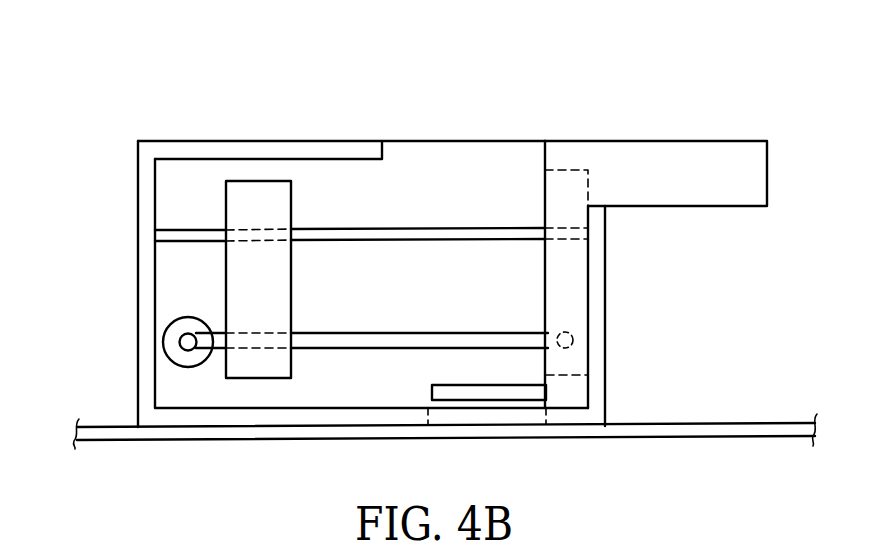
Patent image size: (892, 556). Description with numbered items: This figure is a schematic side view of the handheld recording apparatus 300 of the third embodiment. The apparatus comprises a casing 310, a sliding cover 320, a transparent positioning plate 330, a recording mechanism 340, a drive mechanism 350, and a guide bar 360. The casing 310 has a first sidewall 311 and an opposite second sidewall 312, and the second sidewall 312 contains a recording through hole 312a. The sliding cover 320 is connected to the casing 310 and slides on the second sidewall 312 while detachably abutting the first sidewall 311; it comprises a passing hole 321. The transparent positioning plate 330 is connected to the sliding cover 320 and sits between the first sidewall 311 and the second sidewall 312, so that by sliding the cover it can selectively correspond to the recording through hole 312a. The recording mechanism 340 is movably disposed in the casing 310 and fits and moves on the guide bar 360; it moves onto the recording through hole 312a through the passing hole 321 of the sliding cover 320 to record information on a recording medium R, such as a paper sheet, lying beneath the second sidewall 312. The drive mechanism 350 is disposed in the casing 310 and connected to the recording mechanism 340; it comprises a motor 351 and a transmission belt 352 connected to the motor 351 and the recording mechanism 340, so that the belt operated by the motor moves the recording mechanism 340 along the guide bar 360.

The handheld recording apparatus 300 is at (375, 118).
The casing 310 is at (138, 177).
The first sidewall 311 is at (268, 140).
The second sidewall 312 is at (218, 428).
The recording through hole 312a is at (491, 415).
The sliding cover 320 is at (683, 139).
The passing hole 321 is at (567, 185).
The transparent positioning plate 330 is at (440, 392).
The recording mechanism 340 is at (245, 193).
The drive mechanism 350 is at (165, 324).
The motor 351 is at (164, 344).
The transmission belt 352 is at (493, 332).
The guide bar 360 is at (443, 226).
The recording medium R is at (787, 422).